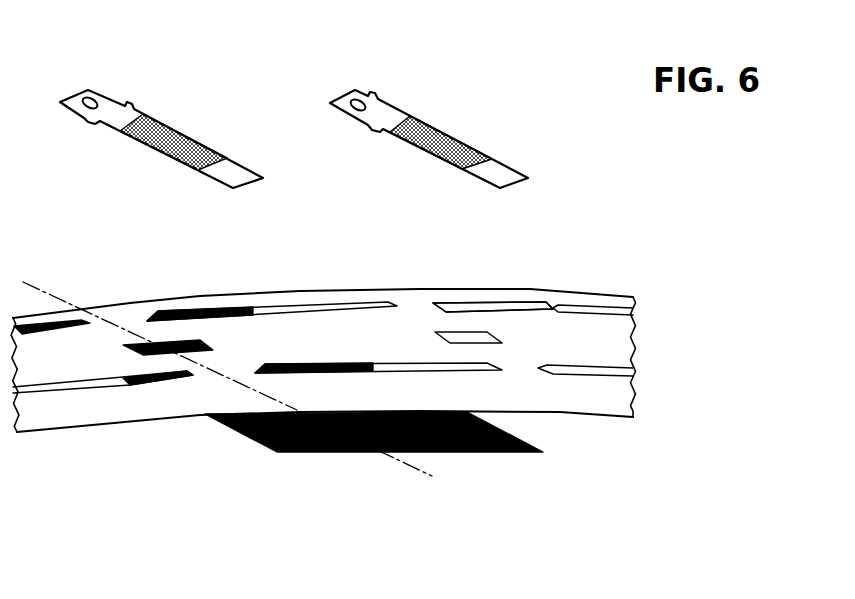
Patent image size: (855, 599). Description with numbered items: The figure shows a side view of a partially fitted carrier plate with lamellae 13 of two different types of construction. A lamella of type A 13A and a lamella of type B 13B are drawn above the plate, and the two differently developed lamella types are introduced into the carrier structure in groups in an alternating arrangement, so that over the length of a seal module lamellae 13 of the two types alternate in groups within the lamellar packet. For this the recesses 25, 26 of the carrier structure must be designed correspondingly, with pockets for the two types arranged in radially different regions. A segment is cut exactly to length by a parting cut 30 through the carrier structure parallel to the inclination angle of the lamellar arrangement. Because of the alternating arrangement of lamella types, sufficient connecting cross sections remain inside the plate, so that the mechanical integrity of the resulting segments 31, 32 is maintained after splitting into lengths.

The lamellae 13 is at (482, 452).
The lamella of type A 13A is at (197, 310).
The lamella of type B 13B is at (172, 337).
The recess 25 is at (550, 309).
The recess 26 is at (550, 309).
The parting cut 30 is at (420, 471).
The segment 31 is at (47, 358).
The segment 32 is at (618, 343).